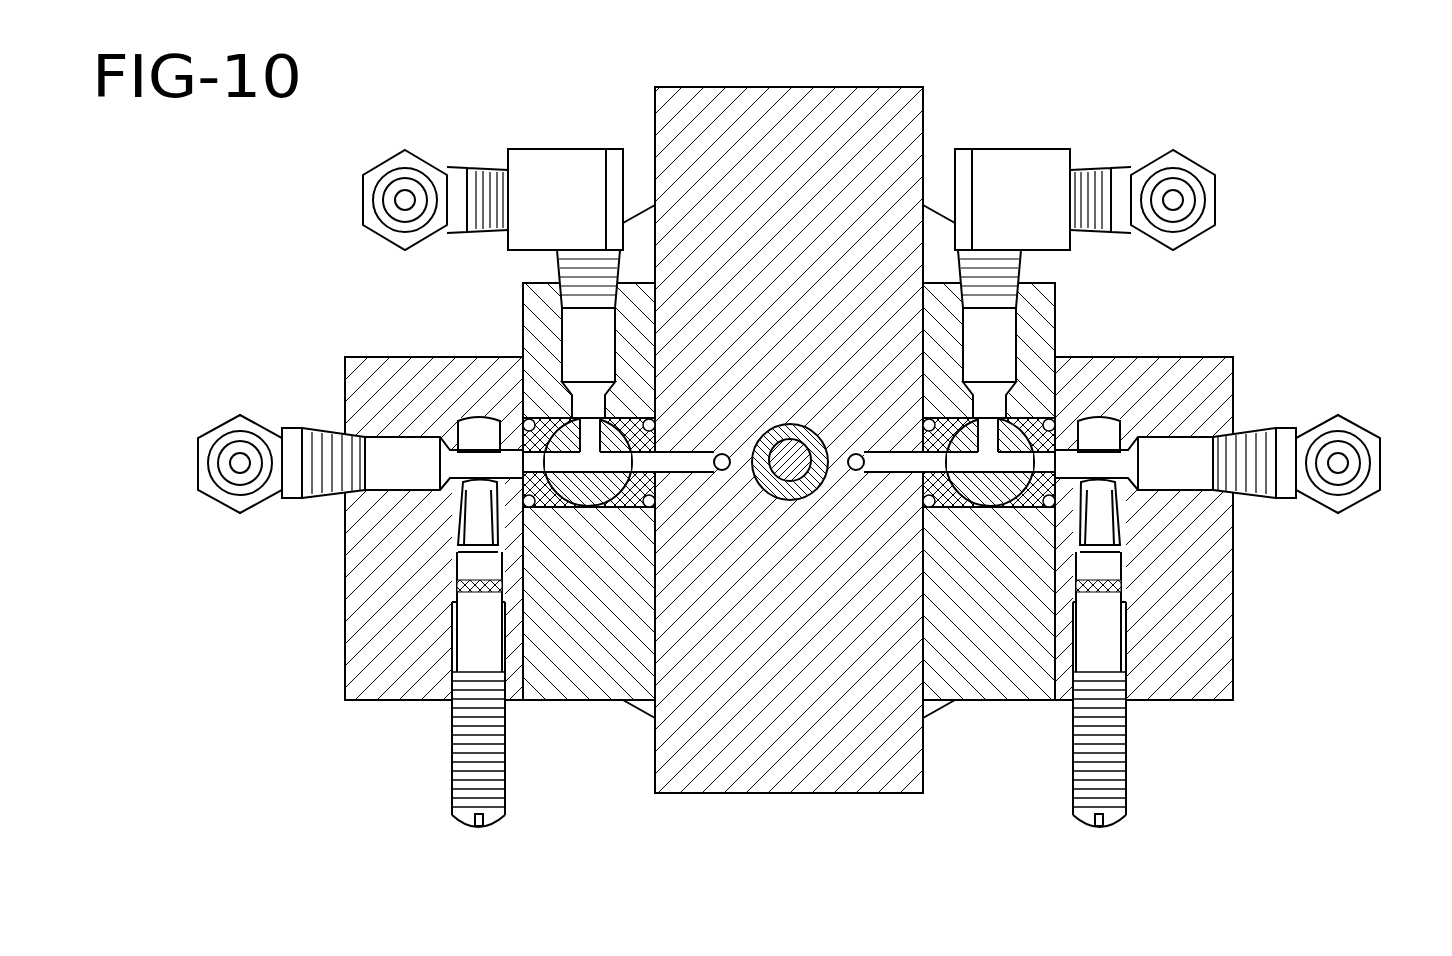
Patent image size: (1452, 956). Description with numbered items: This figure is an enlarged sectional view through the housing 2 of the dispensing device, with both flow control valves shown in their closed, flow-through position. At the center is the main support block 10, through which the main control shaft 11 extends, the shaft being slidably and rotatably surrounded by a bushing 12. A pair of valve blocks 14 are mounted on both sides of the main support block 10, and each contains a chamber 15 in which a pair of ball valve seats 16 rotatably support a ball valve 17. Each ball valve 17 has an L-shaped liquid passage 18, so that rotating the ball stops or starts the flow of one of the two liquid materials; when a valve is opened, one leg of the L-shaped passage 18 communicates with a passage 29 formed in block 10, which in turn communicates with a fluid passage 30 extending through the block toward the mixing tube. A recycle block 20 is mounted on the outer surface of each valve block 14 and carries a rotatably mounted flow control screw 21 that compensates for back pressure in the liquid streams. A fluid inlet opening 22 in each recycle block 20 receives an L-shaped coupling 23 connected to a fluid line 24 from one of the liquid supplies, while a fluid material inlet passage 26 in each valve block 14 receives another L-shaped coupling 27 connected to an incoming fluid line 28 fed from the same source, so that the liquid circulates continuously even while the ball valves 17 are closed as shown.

The housing 2 is at (886, 80).
The main support block 10 is at (770, 118).
The main control shaft 11 is at (792, 472).
The bushing 12 is at (789, 428).
The valve block 14 is at (590, 683).
The chamber 15 is at (600, 497).
The ball valve seat 16 is at (549, 498).
The ball valve 17 is at (612, 443).
The L-shaped liquid passage 18 is at (586, 464).
The recycle block 20 is at (366, 602).
The flow control screw 21 is at (462, 768).
The fluid inlet opening 22 is at (388, 458).
The L-shaped coupling 23 is at (221, 436).
The fluid line 24 is at (223, 487).
The fluid material inlet passage 26 is at (580, 327).
The L-shaped coupling 27 is at (557, 168).
The incoming fluid line 28 is at (392, 218).
The passage 29 is at (690, 464).
The fluid passage 30 is at (720, 454).